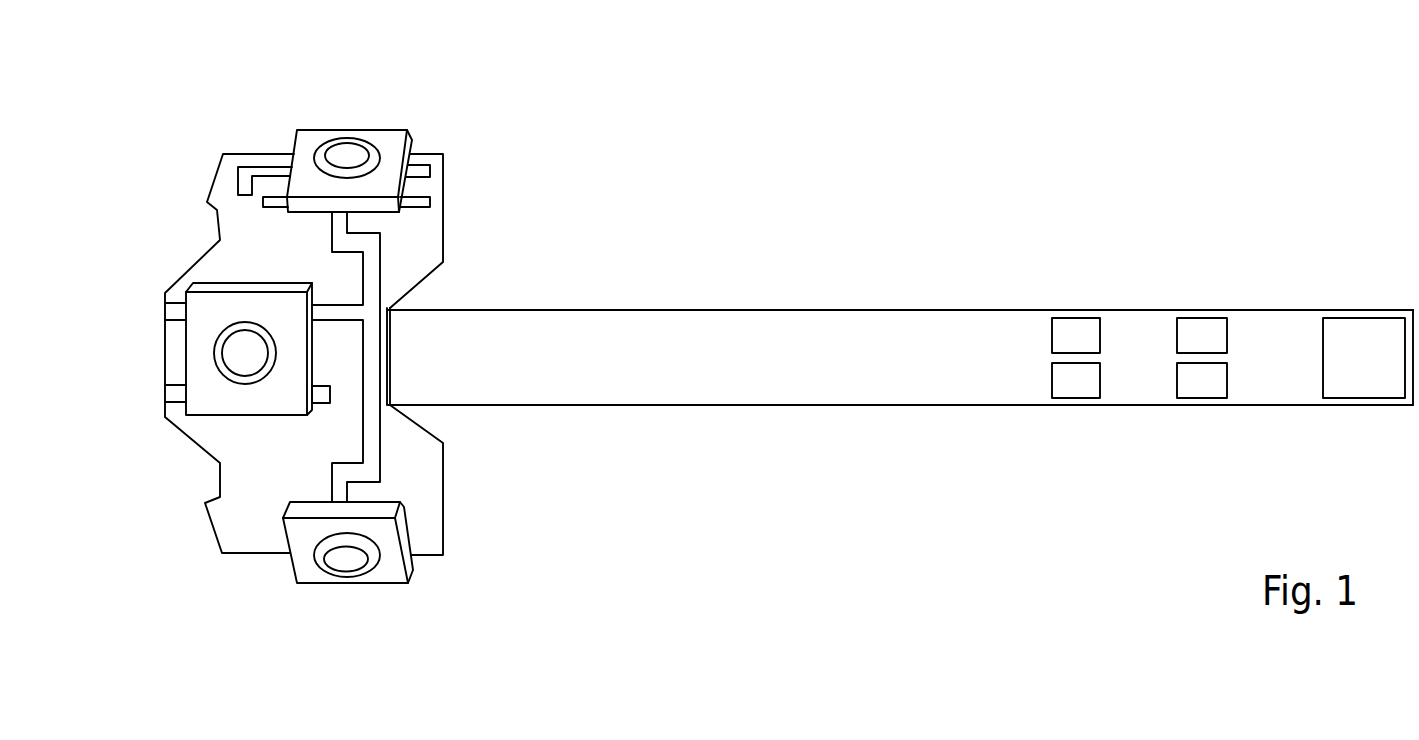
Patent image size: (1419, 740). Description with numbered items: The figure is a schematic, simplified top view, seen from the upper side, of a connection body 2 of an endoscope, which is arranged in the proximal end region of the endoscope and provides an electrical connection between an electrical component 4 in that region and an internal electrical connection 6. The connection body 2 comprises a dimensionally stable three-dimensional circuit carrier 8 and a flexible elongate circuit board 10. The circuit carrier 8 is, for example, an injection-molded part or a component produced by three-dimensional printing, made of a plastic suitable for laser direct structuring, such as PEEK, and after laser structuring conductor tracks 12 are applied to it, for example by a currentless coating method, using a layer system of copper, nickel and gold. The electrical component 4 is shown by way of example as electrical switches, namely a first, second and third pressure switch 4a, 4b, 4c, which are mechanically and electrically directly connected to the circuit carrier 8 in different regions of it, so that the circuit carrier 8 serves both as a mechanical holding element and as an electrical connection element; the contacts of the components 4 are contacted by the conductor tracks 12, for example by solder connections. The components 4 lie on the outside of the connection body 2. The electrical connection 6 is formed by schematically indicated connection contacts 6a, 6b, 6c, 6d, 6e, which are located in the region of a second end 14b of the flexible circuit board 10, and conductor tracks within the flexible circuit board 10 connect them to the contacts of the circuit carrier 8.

The connection body 2 is at (977, 150).
The electrical component 4 is at (283, 362).
The first pressure switch 4a is at (310, 138).
The second pressure switch 4b is at (199, 403).
The third pressure switch 4c is at (310, 575).
The internal electrical connection 6 is at (1235, 357).
The connection contact 6a is at (1067, 328).
The connection contact 6b is at (1205, 328).
The connection contact 6c is at (1067, 377).
The connection contact 6d is at (1205, 377).
The connection contact 6e is at (1367, 377).
The circuit carrier 8 is at (425, 237).
The flexible circuit board 10 is at (753, 330).
The conductor tracks 12 is at (372, 285).
The second end 14b is at (1351, 278).